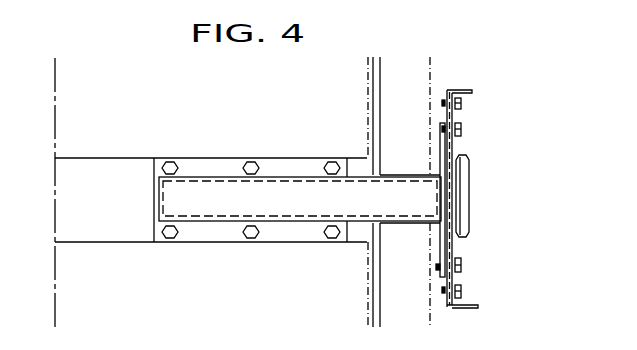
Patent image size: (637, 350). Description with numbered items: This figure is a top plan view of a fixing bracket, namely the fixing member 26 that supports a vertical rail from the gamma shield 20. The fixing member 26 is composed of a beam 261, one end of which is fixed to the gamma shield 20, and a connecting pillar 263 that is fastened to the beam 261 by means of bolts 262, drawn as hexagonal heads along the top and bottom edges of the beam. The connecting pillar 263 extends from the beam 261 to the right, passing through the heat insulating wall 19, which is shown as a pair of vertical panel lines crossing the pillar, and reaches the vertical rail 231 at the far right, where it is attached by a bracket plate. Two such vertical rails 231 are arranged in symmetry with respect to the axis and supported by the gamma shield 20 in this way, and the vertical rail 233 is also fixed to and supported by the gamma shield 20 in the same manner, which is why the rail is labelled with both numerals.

The gamma shield 20 is at (57, 123).
The heat insulating wall 19 is at (367, 95).
The fixing member 26 is at (227, 158).
The beam 261 is at (146, 158).
The bolts 262 is at (251, 158).
The connecting pillar 263 is at (312, 177).
The vertical rail 231 is at (493, 199).
The vertical rail 233 is at (470, 182).